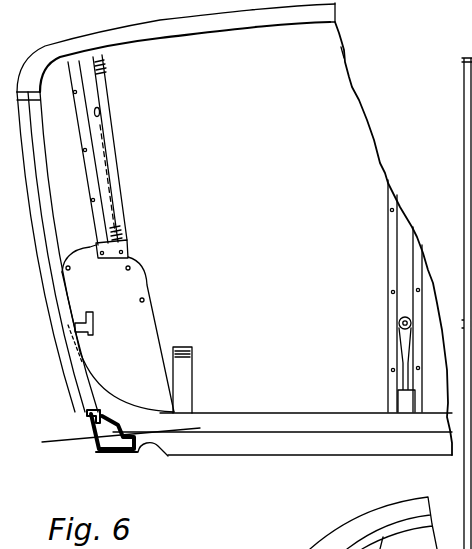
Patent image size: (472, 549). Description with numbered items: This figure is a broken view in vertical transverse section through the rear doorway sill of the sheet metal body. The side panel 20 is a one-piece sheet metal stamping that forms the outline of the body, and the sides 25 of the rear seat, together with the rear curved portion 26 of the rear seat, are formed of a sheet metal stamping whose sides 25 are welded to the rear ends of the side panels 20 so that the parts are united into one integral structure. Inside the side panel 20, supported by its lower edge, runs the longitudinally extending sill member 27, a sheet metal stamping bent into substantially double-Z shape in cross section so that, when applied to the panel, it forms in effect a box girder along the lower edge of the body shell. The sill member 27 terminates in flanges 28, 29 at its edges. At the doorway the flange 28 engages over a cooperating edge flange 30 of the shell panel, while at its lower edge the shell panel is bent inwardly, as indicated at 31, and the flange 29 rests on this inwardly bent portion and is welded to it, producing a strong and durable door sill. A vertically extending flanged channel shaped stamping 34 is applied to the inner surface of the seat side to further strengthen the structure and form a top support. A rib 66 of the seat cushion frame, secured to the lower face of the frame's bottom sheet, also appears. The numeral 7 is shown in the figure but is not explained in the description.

The sides of the rear seat 25 is at (53, 85).
The rear curved portion of the rear seat 26 is at (342, 91).
The rib 66 is at (471, 193).
The vertically extending flanged channel shaped stamping 34 is at (110, 172).
The latch handle 7 is at (80, 220).
The sill member 27 is at (100, 413).
The edge flange of the shell panel 30 is at (112, 357).
The flange of sill member 28 is at (87, 414).
The side panel 20 is at (93, 446).
The inwardly bent lower edge of shell panel 31 is at (127, 458).
The flange of sill member 29 is at (157, 464).